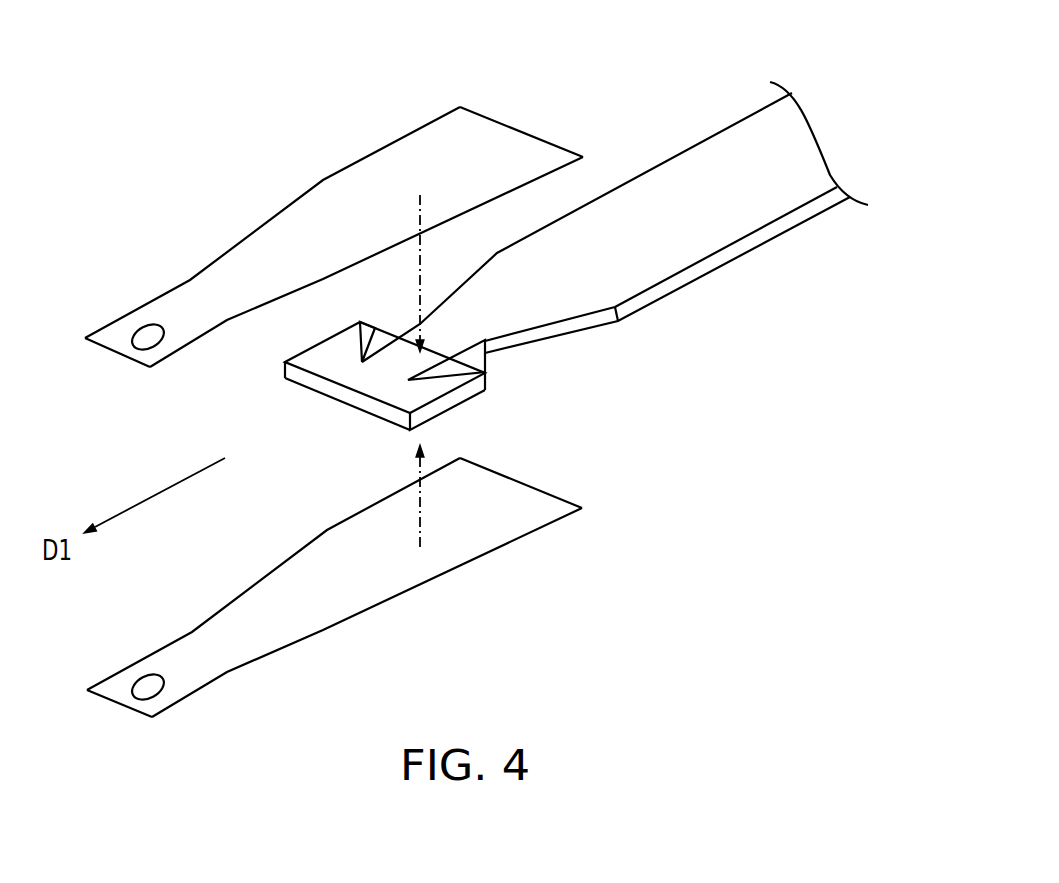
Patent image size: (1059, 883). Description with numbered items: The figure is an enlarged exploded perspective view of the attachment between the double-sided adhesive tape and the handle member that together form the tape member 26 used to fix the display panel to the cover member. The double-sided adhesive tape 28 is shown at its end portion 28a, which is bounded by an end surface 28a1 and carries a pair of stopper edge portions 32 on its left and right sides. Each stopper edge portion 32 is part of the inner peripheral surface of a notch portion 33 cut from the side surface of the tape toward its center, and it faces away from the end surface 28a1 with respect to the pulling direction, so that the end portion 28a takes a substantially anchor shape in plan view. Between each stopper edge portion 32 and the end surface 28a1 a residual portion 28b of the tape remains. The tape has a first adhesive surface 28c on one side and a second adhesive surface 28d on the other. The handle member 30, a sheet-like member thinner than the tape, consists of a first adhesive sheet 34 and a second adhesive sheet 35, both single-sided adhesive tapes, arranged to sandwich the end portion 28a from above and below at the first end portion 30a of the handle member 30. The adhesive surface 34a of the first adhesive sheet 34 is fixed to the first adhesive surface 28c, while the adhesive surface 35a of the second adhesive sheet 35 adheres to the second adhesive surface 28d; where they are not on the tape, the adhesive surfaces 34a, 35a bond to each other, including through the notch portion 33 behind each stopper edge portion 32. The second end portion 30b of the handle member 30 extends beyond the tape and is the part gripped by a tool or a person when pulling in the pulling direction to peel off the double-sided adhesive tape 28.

The tape member 26 is at (137, 63).
The double-sided adhesive tape 28 is at (527, 286).
The end portion 28a is at (351, 406).
The end surface 28a1 is at (328, 403).
The residual portion 28b is at (287, 376).
The first adhesive surface 28c is at (670, 190).
The second adhesive surface 28d is at (690, 282).
The handle member 30 is at (334, 227).
The first end portion 30a is at (438, 138).
The second end portion 30b is at (110, 350).
The stopper edge portion 32 is at (357, 327).
The notch portion 33 is at (393, 335).
The first adhesive sheet 34 is at (222, 283).
The adhesive surface 34a is at (537, 207).
The second adhesive sheet 35 is at (336, 640).
The adhesive surface 35a is at (462, 553).